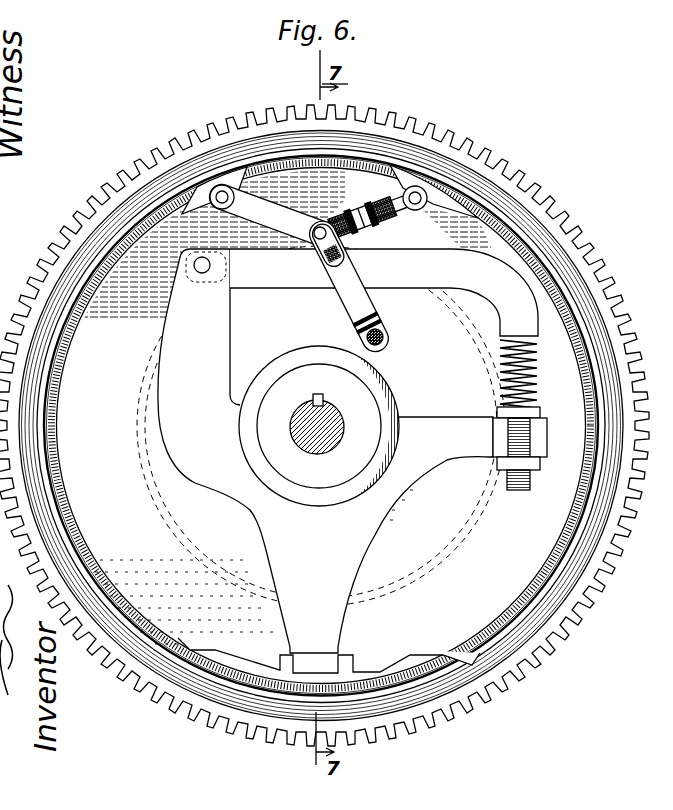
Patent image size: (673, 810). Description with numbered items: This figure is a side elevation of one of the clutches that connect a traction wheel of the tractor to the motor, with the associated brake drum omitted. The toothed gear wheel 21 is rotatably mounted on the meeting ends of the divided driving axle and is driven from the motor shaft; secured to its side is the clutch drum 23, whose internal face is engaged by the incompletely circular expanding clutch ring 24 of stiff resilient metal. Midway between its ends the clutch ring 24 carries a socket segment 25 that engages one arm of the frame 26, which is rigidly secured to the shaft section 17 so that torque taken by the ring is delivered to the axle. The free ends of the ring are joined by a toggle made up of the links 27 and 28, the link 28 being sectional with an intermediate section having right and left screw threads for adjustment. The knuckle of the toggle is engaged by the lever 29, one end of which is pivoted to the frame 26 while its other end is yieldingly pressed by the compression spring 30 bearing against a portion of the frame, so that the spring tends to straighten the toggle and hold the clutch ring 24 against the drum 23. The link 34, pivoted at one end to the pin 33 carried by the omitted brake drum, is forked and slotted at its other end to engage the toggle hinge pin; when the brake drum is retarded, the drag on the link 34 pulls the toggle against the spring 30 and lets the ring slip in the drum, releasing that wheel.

The shaft section 17 is at (337, 444).
The gear wheel 21 is at (162, 146).
The clutch drum 23 is at (273, 157).
The clutch ring 24 is at (163, 200).
The socket segment 25 is at (380, 667).
The frame 26 is at (338, 613).
The toggle link 27 is at (269, 209).
The toggle link 28 is at (388, 196).
The lever 29 is at (417, 257).
The compression spring 30 is at (533, 392).
The pin 33 is at (387, 334).
The link 34 is at (343, 300).